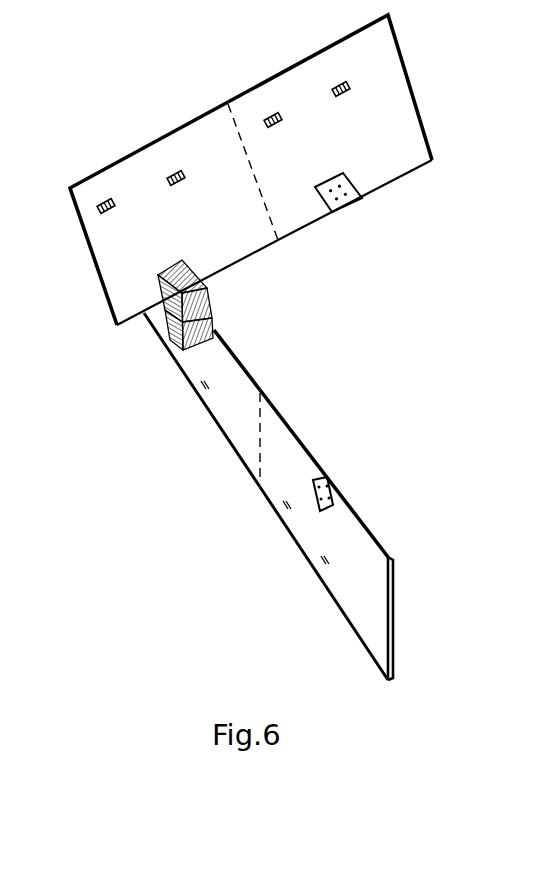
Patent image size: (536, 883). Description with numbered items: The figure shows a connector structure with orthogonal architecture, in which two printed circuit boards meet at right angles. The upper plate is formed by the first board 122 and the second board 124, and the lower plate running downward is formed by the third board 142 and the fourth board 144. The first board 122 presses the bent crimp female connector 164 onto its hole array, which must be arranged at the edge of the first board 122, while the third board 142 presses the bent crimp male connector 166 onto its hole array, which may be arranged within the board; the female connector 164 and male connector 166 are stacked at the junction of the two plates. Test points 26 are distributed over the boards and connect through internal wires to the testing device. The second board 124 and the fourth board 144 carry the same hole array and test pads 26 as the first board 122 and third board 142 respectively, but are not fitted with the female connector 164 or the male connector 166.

The test point 26 is at (337, 85).
The first board 122 is at (115, 245).
The second board 124 is at (388, 160).
The third board 142 is at (193, 370).
The fourth board 144 is at (362, 567).
The bent crimp female connector 164 is at (210, 292).
The bent crimp male connector 166 is at (175, 347).